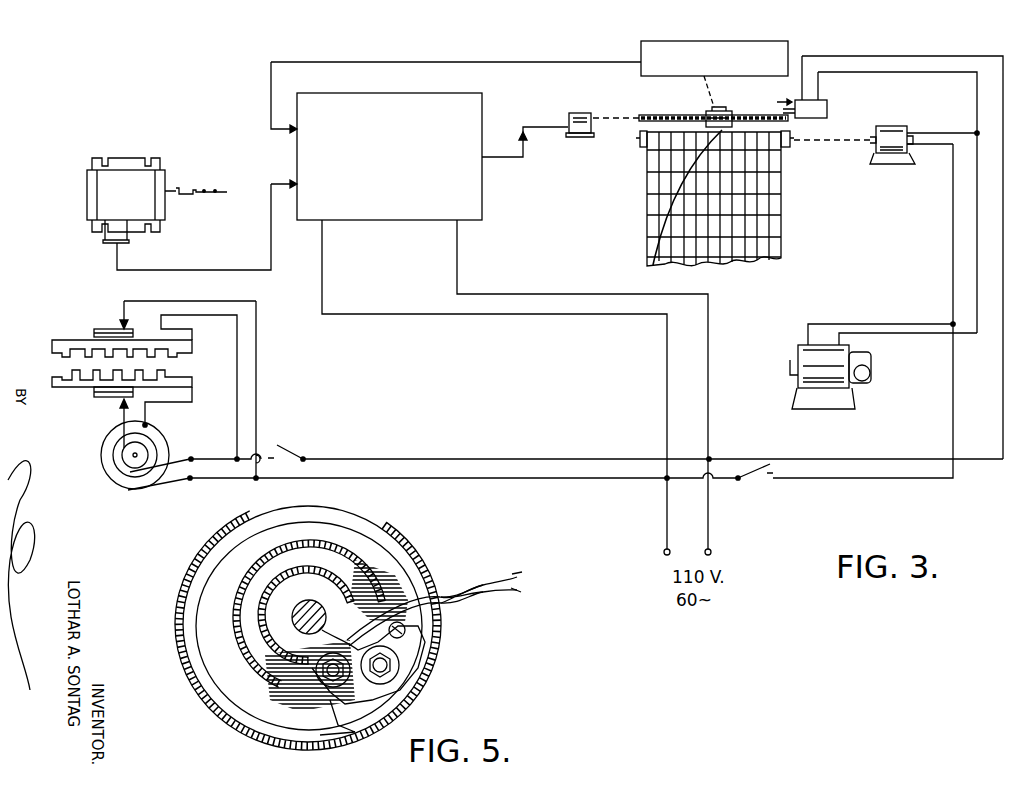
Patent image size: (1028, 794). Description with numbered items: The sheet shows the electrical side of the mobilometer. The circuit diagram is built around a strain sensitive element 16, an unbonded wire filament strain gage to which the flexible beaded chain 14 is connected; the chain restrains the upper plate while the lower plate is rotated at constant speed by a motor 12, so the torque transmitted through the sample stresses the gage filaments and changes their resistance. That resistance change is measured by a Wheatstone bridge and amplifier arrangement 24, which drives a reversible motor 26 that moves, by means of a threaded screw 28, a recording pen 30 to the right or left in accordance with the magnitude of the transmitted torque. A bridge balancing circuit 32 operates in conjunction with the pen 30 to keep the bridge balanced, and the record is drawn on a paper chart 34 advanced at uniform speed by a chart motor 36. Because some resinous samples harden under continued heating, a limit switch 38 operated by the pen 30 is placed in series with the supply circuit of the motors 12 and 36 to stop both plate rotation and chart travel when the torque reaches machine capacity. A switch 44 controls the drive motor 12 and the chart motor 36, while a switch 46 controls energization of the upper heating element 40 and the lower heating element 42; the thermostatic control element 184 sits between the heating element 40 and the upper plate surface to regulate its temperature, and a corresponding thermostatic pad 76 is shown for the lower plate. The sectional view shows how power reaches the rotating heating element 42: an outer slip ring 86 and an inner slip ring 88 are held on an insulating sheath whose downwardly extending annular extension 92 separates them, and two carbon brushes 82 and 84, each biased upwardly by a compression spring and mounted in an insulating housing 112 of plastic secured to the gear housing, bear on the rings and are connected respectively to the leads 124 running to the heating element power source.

In FIG. 3, the motor 12 is at (798, 345).
In FIG. 3, the flexible beaded chain 14 is at (205, 188).
In FIG. 3, the strain sensitive element 16 is at (124, 160).
In FIG. 3, the Wheatstone bridge and amplifier arrangement 24 is at (362, 222).
In FIG. 3, the reversible motor 26 is at (577, 137).
In FIG. 3, the threaded screw 28 is at (665, 114).
In FIG. 3, the recording pen 30 is at (727, 111).
In FIG. 3, the bridge balancing circuit 32 is at (705, 41).
In FIG. 3, the paper chart 34 is at (781, 230).
In FIG. 3, the motor 36 is at (904, 126).
In FIG. 3, the limit switch 38 is at (827, 104).
In FIG. 3, the heating element 40 is at (70, 356).
In FIG. 3, the heating element 42 is at (170, 372).
In FIG. 3, the switch 44 is at (758, 480).
In FIG. 3, the switch 46 is at (290, 452).
In FIG. 3, the lower contact pad 76 is at (103, 400).
In FIG. 3, the thermostatic control element 184 is at (100, 328).
In FIG. 5, the carbon brush 82 is at (345, 673).
In FIG. 5, the carbon brush 84 is at (413, 654).
In FIG. 5, the outer slip ring 86 is at (218, 607).
In FIG. 5, the inner slip ring 88 is at (255, 642).
In FIG. 5, the annular extension 92 is at (240, 590).
In FIG. 5, the insulating housing 112 is at (380, 665).
In FIG. 5, the leads 124 is at (520, 582).